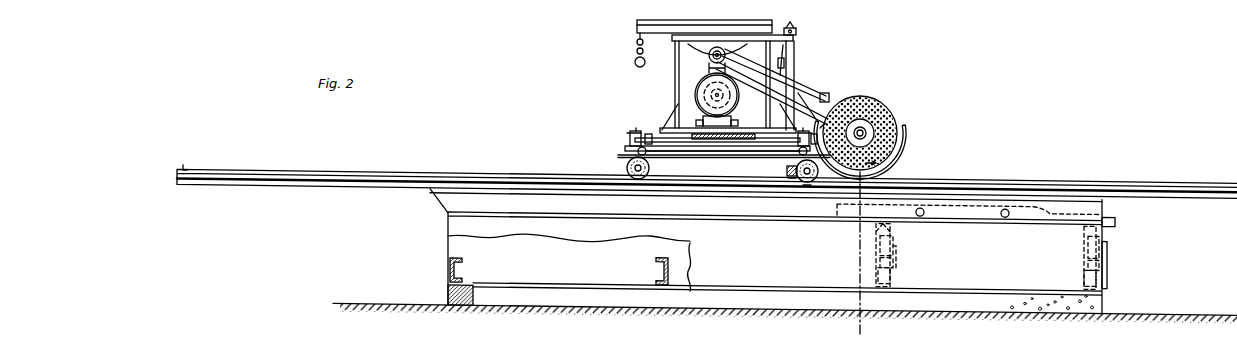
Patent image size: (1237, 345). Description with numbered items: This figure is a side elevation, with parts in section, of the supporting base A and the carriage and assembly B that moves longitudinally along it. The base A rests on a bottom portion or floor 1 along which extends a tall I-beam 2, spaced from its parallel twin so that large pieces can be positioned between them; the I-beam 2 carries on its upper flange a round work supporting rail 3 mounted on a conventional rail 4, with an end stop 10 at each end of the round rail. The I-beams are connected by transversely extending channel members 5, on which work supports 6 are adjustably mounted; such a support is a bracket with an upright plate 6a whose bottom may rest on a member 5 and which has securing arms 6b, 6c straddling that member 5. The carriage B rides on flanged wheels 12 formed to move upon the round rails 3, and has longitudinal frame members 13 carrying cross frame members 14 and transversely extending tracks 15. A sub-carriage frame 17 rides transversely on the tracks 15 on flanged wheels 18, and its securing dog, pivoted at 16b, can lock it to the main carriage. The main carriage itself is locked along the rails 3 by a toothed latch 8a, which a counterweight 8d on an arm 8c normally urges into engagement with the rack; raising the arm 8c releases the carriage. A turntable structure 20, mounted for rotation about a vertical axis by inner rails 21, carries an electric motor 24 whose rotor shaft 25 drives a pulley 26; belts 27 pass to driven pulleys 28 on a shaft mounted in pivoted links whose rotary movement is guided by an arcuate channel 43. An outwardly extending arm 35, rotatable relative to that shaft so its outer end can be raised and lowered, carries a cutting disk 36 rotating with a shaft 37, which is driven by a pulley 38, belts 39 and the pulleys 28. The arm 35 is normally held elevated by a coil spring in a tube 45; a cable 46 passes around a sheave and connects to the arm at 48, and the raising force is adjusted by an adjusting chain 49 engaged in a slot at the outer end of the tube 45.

The bottom portion 1 is at (448, 293).
The I-beam 2 is at (447, 245).
The work supporting rail 3 is at (414, 172).
The conventional rail 4 is at (437, 201).
The transversely extending member 5 is at (462, 270).
The work support 6 is at (899, 251).
The upright plate 6a is at (876, 246).
The securing arm 6b is at (876, 277).
The securing arm 6c is at (895, 262).
The toothed latch 8a is at (790, 180).
The arm 8c is at (787, 174).
The counterweight 8d is at (807, 186).
The end stop 10 is at (183, 165).
The flanged wheel 12 is at (627, 170).
The longitudinal extending frame member 13 is at (667, 161).
The cross frame member 14 is at (808, 156).
The transversely extending track 15 is at (630, 141).
The pivot 16b is at (638, 153).
The sub-carriage frame 17 is at (745, 158).
The flanged wheel 18 is at (633, 133).
The turntable structure 20 is at (669, 122).
The inner rail 21 is at (744, 137).
The motor 24 is at (700, 103).
The rotor shaft 25 is at (716, 97).
The pulley 26 is at (716, 88).
The belt 27 is at (712, 68).
The driven pulley 28 is at (717, 47).
The outwardly extending arm 35 is at (798, 93).
The cutting disk 36 is at (884, 111).
The shaft 37 is at (867, 130).
The pulley 38 is at (882, 92).
The belt 39 is at (831, 96).
The arcuate channel 43 is at (705, 50).
The tube 45 is at (640, 27).
The cable 46 is at (794, 53).
The connection 48 is at (784, 75).
The adjusting chain 49 is at (636, 52).
The supporting base A is at (1071, 179).
The carriage and assembly B is at (809, 38).